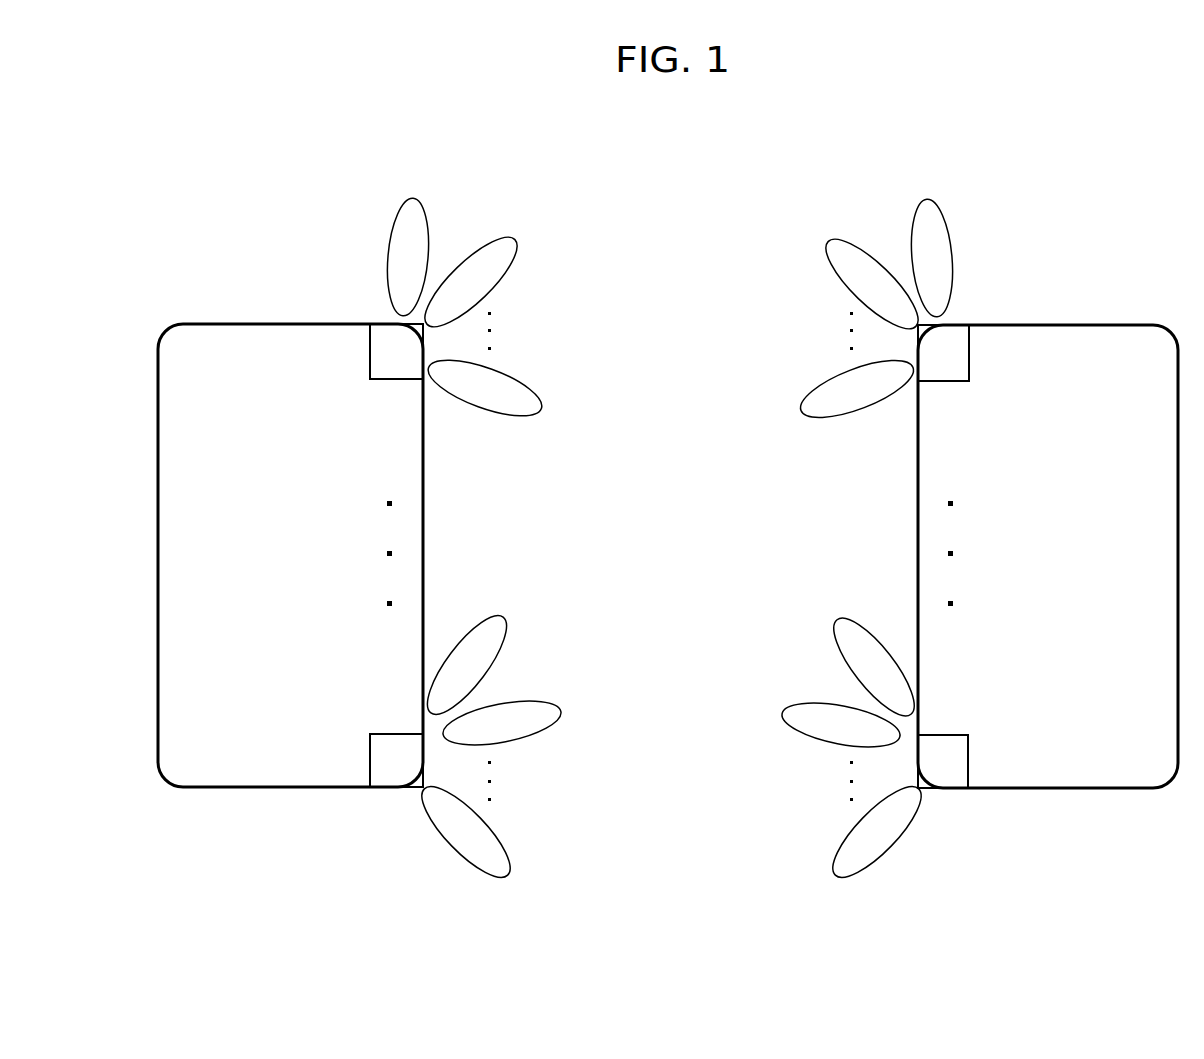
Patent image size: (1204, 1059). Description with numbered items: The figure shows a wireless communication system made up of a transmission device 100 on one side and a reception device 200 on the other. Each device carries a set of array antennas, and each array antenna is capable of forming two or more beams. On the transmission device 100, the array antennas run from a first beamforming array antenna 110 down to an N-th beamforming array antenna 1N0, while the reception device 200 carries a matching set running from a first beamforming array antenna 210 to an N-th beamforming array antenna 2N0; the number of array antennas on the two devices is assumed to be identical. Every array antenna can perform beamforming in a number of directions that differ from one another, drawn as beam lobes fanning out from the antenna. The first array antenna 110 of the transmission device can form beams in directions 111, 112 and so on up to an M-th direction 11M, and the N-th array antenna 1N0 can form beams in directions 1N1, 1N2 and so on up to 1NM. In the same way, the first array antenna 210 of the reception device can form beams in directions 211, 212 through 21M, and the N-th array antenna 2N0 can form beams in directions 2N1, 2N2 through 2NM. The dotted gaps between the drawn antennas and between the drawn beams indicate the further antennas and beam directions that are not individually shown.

The transmission device 100 is at (238, 323).
The first beamforming array antenna 110 is at (380, 353).
The beamforming direction 111 is at (425, 213).
The beamforming direction 112 is at (512, 240).
The beamforming direction 11M is at (527, 380).
The N-th beamforming array antenna 1N0 is at (397, 760).
The beamforming direction 1N1 is at (503, 613).
The beamforming direction 1N2 is at (552, 700).
The beamforming direction 1NM is at (503, 850).
The reception device 200 is at (1100, 325).
The first beamforming array antenna 210 is at (958, 357).
The beamforming direction 211 is at (920, 212).
The beamforming direction 212 is at (830, 242).
The beamforming direction 21M is at (817, 382).
The N-th beamforming array antenna 2N0 is at (945, 760).
The beamforming direction 2N1 is at (840, 618).
The beamforming direction 2N2 is at (795, 705).
The beamforming direction 2NM is at (840, 852).